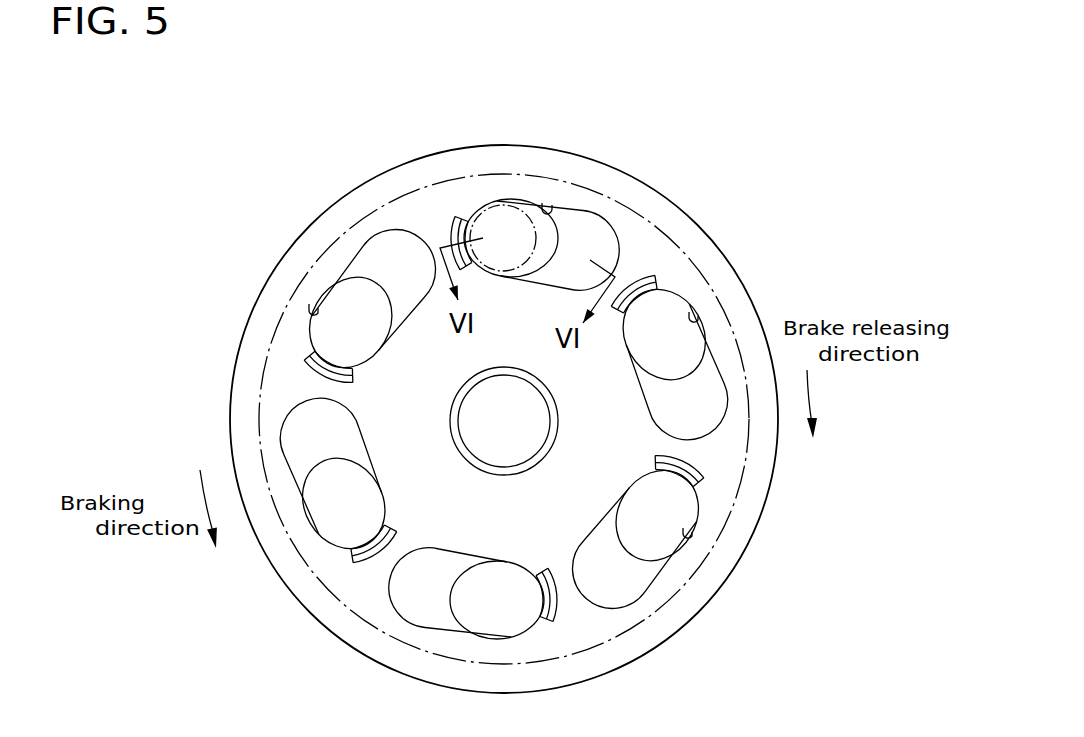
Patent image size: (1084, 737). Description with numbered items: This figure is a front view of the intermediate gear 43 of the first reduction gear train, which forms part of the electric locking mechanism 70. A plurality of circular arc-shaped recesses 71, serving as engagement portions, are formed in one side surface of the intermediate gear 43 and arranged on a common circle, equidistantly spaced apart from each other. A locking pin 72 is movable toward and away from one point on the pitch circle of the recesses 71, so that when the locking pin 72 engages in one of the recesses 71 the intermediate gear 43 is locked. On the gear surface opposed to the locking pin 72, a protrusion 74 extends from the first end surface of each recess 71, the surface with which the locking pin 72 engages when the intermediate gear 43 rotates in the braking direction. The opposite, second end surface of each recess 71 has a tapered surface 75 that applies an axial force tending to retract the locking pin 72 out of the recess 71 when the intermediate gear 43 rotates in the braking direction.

The intermediate gear 43 is at (373, 177).
The electric locking mechanism 70 is at (535, 190).
The circular arc-shaped recess 71 is at (316, 310).
The locking pin 72 is at (500, 205).
The protrusion 74 is at (303, 375).
The tapered surface 75 is at (378, 255).